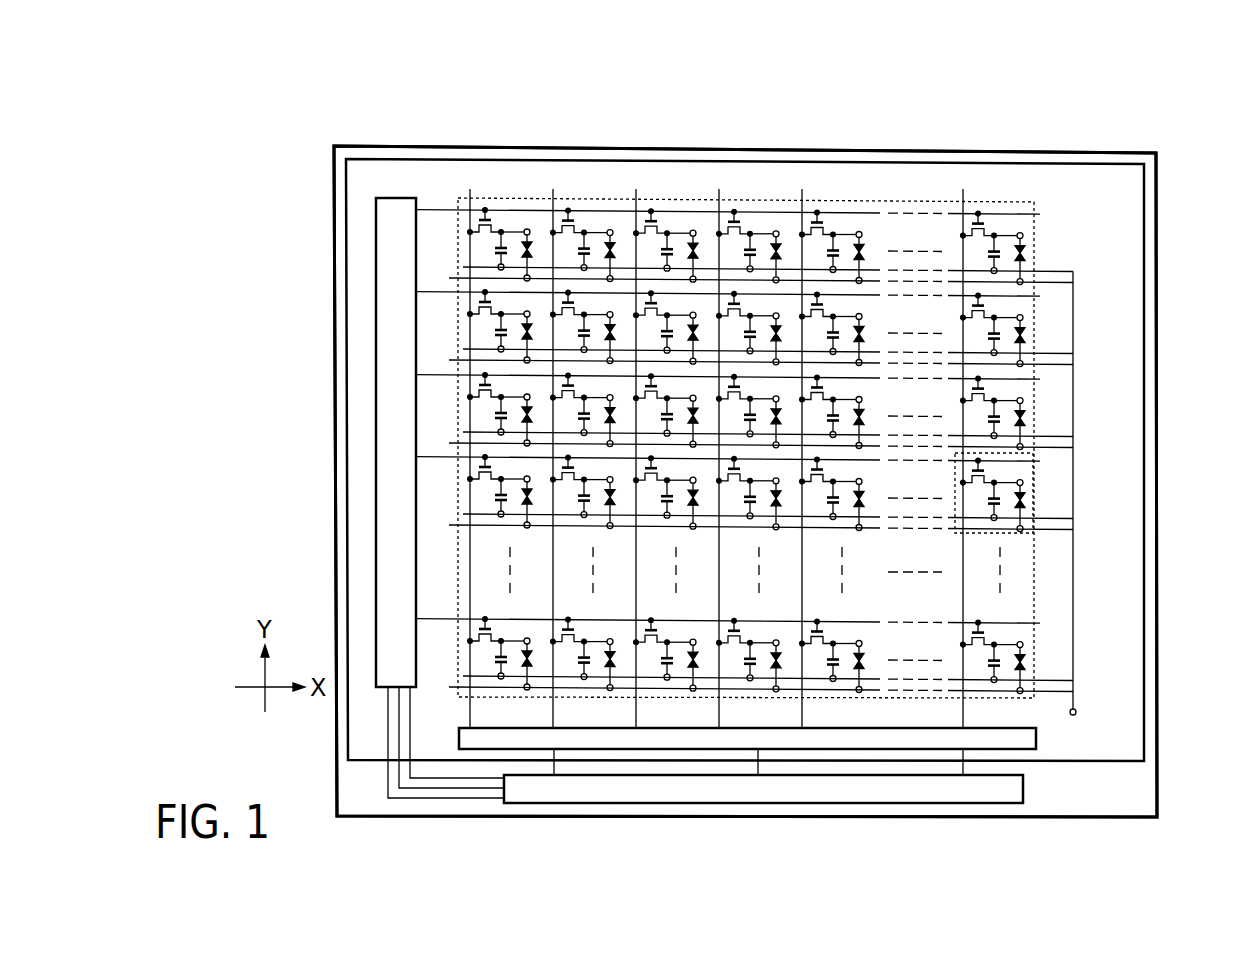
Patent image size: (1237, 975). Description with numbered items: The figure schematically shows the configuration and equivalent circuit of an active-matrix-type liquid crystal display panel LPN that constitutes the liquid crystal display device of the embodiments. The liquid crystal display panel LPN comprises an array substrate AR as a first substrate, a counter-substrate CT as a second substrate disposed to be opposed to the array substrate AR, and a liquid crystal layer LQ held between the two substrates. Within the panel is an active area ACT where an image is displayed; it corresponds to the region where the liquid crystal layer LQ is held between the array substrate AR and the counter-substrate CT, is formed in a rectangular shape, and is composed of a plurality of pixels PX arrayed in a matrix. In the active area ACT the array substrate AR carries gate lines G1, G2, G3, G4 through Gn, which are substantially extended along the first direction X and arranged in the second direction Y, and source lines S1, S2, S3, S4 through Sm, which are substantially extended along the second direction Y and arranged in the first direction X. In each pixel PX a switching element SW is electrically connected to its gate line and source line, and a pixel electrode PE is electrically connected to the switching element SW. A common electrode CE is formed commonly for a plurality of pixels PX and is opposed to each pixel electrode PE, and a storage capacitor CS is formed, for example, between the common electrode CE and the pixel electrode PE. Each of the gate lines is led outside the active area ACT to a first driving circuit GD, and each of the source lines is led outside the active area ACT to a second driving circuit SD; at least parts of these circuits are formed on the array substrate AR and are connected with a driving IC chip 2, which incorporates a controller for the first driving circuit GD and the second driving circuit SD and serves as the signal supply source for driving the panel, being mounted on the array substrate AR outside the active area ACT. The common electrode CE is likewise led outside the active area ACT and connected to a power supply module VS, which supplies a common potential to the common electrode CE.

The liquid crystal display panel LPN is at (1149, 110).
The array substrate AR is at (1148, 787).
The counter-substrate CT is at (1145, 186).
The active area ACT is at (1036, 311).
The first driving circuit GD is at (376, 553).
The second driving circuit SD is at (1038, 738).
The driving IC chip 2 is at (1025, 790).
The gate line G1 is at (442, 195).
The gate line G2 is at (442, 277).
The gate line G3 is at (442, 360).
The gate line G4 is at (442, 442).
The gate line Gn is at (430, 619).
The source line S1 is at (472, 715).
The source line S2 is at (555, 715).
The source line S3 is at (638, 715).
The source line S4 is at (721, 715).
The source line Sm is at (965, 715).
The power supply module VS is at (1076, 709).
The pixel PX is at (1008, 503).
The switching element SW is at (951, 474).
The storage capacitor CS is at (976, 504).
The pixel electrode PE is at (1023, 482).
The liquid crystal layer LQ is at (1025, 497).
The common electrode CE is at (1023, 526).